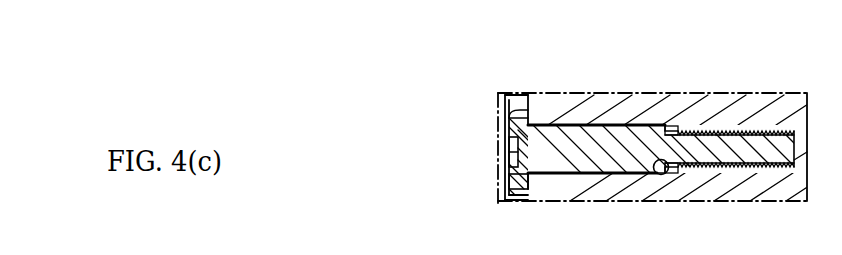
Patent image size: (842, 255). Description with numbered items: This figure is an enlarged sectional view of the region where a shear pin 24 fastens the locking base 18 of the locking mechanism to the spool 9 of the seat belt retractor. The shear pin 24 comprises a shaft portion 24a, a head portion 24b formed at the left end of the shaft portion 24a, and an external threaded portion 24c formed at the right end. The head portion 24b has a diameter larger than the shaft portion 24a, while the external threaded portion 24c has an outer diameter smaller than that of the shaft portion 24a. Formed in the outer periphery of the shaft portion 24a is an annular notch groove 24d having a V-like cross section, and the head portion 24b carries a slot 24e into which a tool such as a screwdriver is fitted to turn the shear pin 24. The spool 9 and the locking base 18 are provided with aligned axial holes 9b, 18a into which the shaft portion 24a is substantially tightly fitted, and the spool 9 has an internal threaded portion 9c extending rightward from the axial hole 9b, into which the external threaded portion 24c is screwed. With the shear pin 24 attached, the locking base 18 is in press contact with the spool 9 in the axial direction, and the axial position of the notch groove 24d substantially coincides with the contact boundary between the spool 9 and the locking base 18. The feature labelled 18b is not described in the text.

The spool 9 is at (778, 113).
The axial hole 9b is at (662, 175).
The internal threaded portion 9c is at (704, 146).
The locking base 18 is at (587, 125).
The axial hole 18a is at (588, 175).
The hook portion 18b is at (515, 118).
The shear pin 24 is at (633, 165).
The shaft portion 24a is at (623, 125).
The head portion 24b is at (508, 187).
The external threaded portion 24c is at (737, 168).
The notch groove 24d is at (588, 118).
The slot 24e is at (505, 148).